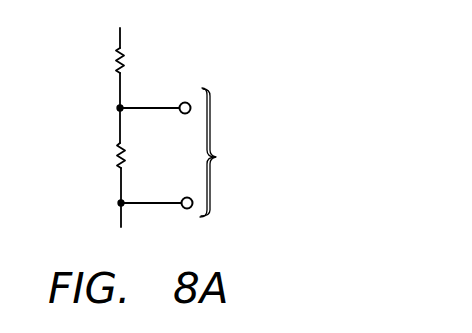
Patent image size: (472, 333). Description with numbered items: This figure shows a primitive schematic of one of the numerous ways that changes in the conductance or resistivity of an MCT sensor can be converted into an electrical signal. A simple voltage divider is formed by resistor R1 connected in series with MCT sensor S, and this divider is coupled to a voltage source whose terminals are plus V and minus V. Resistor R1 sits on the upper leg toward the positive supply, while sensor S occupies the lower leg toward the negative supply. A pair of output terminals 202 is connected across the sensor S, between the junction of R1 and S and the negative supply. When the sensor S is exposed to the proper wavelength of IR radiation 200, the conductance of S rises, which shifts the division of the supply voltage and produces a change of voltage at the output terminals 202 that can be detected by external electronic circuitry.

The IR radiation 200 is at (109, 129).
The output terminals 202 is at (231, 152).
The resistor R1 is at (136, 63).
The MCT sensor S is at (130, 156).